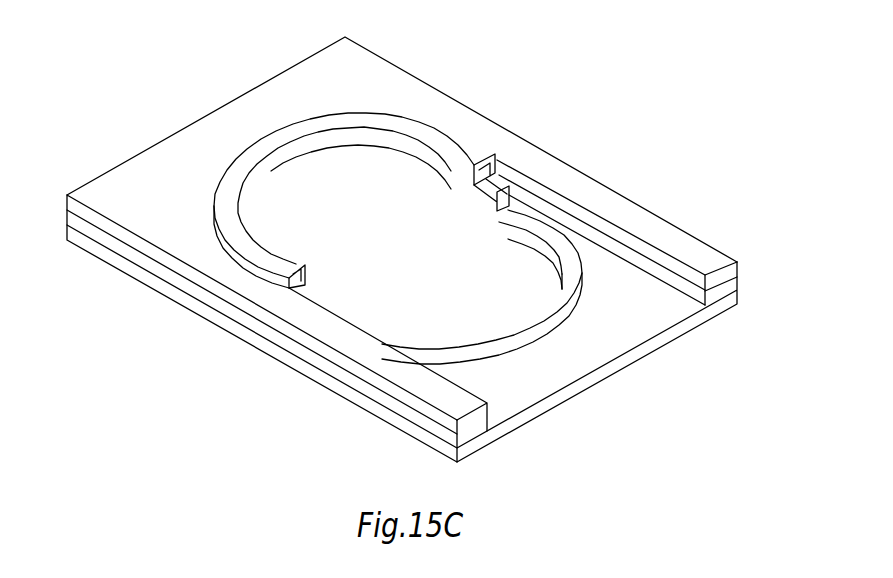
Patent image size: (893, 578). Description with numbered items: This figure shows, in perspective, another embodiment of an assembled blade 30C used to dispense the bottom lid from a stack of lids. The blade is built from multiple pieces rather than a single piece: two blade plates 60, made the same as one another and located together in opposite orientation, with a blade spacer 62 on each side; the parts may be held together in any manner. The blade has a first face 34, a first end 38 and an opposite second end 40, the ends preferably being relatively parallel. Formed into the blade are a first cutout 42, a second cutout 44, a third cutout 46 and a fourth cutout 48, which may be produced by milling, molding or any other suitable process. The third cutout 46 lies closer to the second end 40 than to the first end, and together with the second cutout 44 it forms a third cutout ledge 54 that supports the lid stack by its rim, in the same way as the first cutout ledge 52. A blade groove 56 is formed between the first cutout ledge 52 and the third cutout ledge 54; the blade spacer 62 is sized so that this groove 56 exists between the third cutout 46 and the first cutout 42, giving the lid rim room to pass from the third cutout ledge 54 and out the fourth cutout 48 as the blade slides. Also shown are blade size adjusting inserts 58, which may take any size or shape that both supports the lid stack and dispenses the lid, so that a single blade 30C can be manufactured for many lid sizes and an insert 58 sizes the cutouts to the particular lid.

The blade 30C is at (533, 62).
The first face 34 is at (282, 91).
The first end 38 is at (192, 123).
The second end 40 is at (596, 375).
The first cutout 42 is at (284, 160).
The second cutout 44 is at (650, 257).
The third cutout 46 is at (533, 237).
The fourth cutout 48 is at (441, 168).
The first cutout ledge 52 is at (242, 216).
The third cutout ledge 54 is at (558, 281).
The blade groove 56 is at (494, 201).
The blade size adjusting insert 58 is at (238, 171).
The blade plate 60 is at (421, 98).
The blade spacer 62 is at (72, 222).